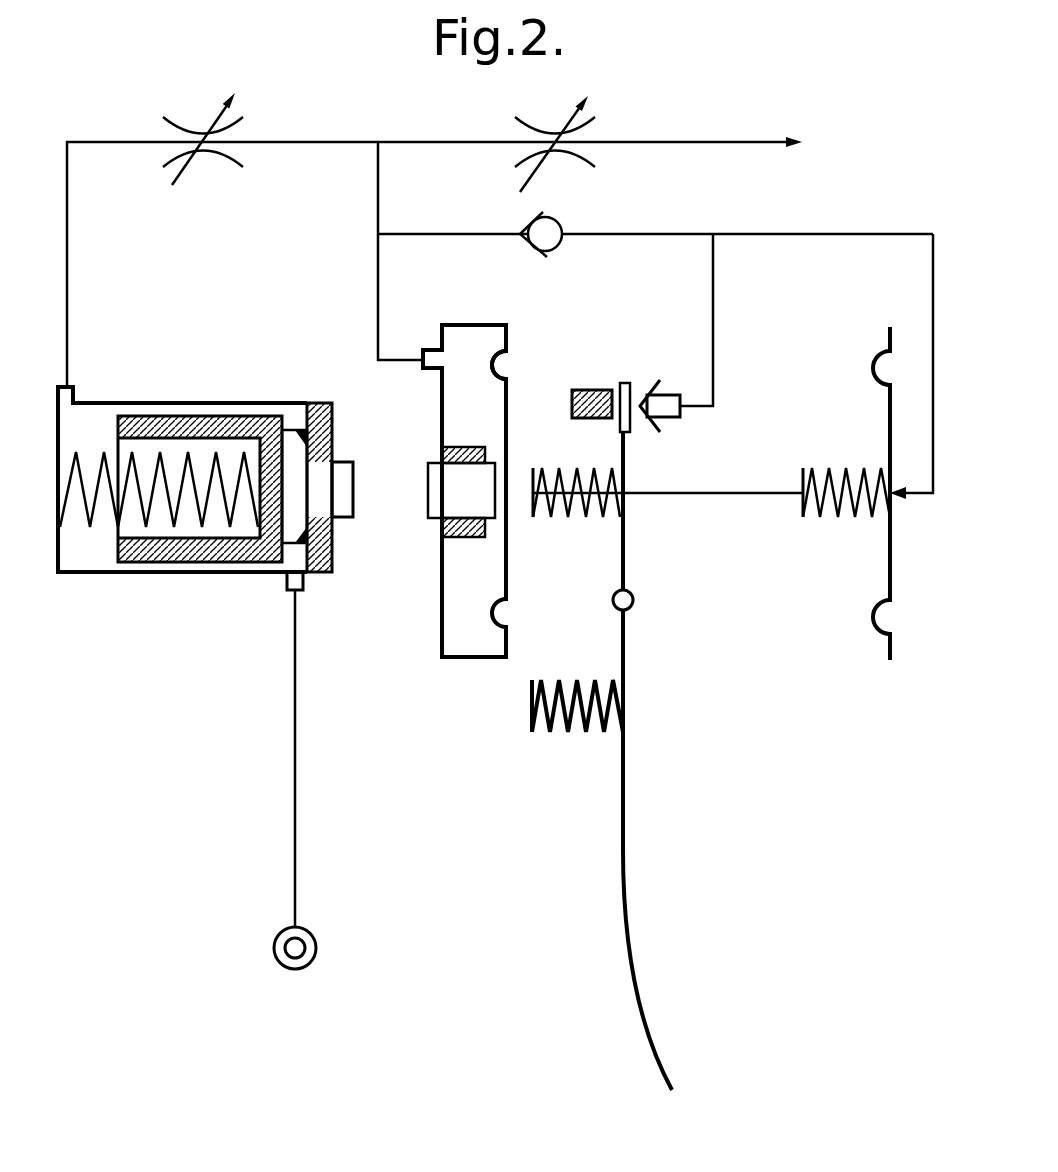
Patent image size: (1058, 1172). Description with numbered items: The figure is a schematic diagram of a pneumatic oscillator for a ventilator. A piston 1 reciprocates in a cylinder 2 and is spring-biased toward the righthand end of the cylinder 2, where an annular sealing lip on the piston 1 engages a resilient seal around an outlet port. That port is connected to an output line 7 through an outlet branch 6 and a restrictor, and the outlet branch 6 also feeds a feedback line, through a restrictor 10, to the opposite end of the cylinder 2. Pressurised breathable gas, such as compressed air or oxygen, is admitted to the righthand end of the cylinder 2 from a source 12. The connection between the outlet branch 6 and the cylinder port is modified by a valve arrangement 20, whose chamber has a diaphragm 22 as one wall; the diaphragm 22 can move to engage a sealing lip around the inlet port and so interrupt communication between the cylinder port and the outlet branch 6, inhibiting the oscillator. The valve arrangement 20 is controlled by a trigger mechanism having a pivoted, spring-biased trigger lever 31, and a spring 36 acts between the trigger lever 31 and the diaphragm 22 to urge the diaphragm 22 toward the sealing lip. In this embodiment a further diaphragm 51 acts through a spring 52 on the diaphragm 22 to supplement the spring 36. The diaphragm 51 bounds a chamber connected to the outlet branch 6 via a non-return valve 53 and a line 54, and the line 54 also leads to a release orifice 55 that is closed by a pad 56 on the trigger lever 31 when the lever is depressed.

The piston 1 is at (172, 552).
The cylinder 2 is at (157, 403).
The outlet branch 6 is at (378, 208).
The output line 7 is at (735, 143).
The restrictor 10 is at (213, 152).
The source 12 is at (278, 944).
The valve arrangement 20 is at (458, 657).
The diaphragm 22 is at (499, 369).
The trigger lever 31 is at (634, 945).
The spring 36 is at (557, 506).
The diaphragm 51 is at (893, 565).
The spring 52 is at (818, 510).
The non-return valve 53 is at (556, 249).
The line 54 is at (800, 234).
The release orifice 55 is at (670, 417).
The pad 56 is at (628, 383).